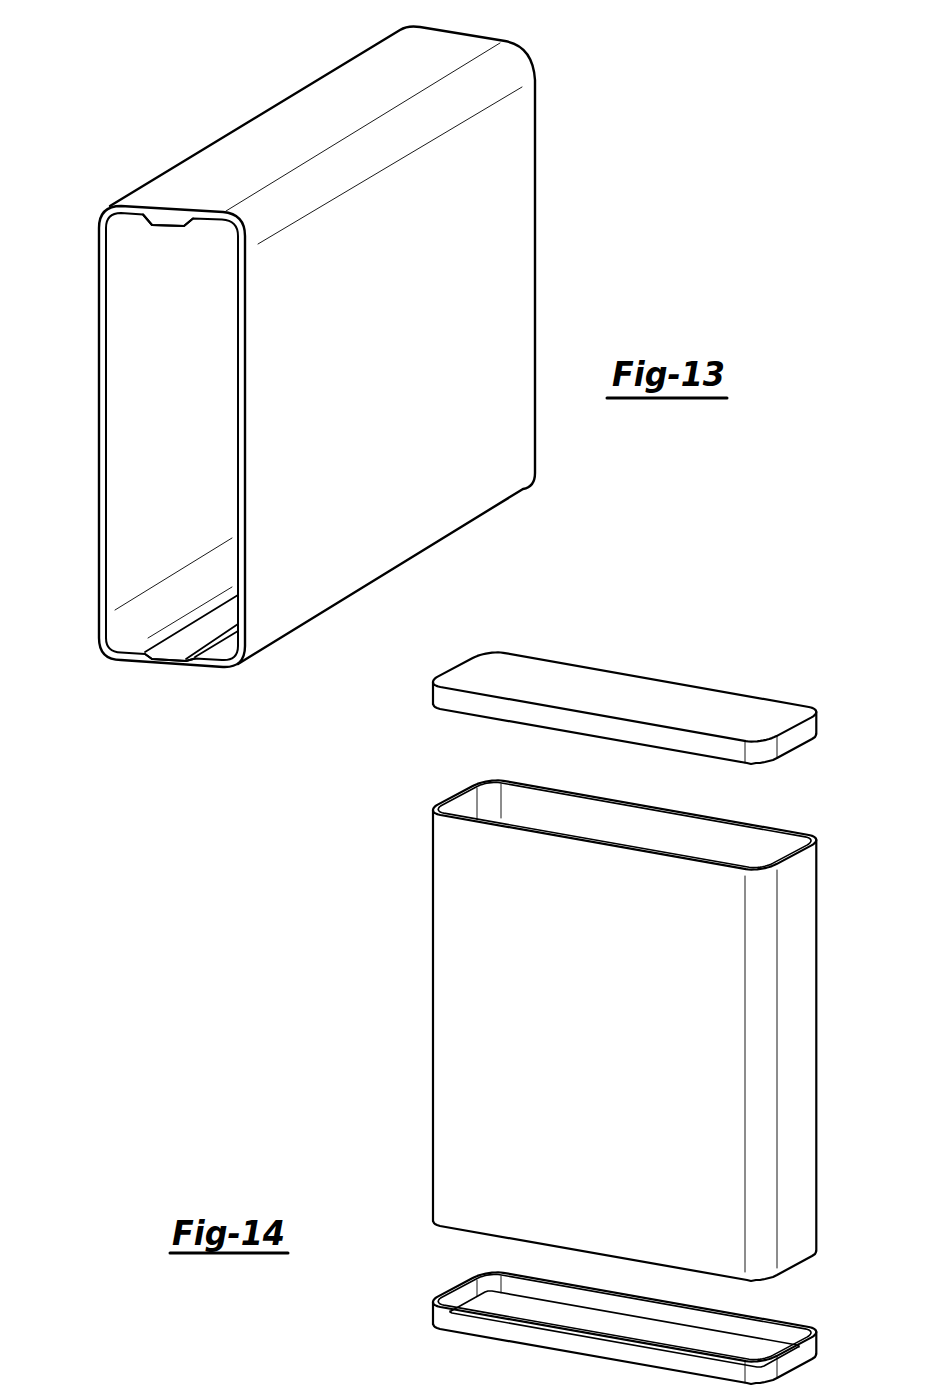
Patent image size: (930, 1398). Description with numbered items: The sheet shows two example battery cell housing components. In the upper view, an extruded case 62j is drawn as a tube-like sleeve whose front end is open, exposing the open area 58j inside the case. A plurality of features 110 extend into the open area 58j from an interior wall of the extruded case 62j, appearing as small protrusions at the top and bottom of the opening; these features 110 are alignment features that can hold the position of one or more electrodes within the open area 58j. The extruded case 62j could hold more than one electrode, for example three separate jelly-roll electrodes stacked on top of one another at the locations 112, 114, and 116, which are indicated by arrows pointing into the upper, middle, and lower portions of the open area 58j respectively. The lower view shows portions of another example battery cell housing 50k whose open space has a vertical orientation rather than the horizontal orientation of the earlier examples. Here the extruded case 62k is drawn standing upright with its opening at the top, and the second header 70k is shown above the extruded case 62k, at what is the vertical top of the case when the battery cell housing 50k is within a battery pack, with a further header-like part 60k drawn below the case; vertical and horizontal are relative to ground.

In FIG. 13, the extruded case 62j is at (566, 40).
In FIG. 13, the open area 58j is at (136, 273).
In FIG. 13, the features 110 is at (160, 228).
In FIG. 13, the location 112 is at (128, 313).
In FIG. 13, the location 114 is at (124, 436).
In FIG. 13, the location 116 is at (124, 559).
In FIG. 14, the battery cell housing 50k is at (658, 1003).
In FIG. 14, the second header 70k is at (741, 653).
In FIG. 14, the extruded case 62k is at (818, 1012).
In FIG. 14, the base tray 60k is at (798, 1352).